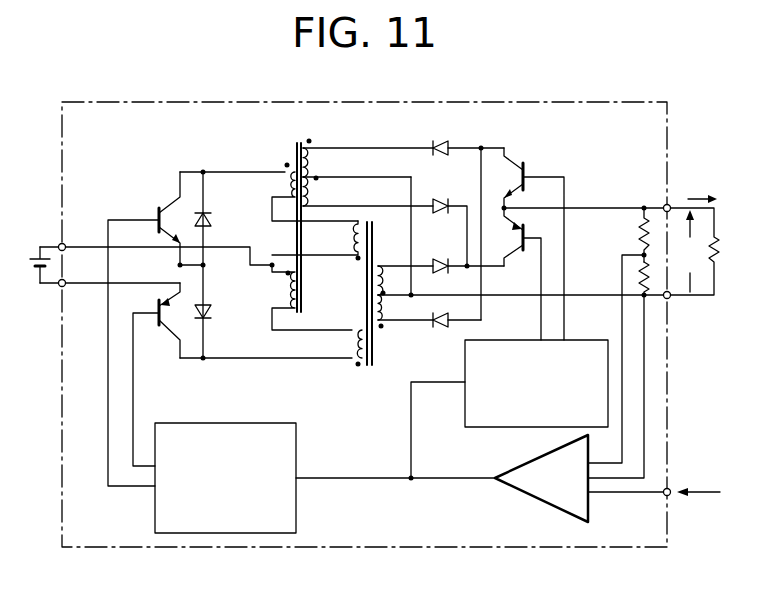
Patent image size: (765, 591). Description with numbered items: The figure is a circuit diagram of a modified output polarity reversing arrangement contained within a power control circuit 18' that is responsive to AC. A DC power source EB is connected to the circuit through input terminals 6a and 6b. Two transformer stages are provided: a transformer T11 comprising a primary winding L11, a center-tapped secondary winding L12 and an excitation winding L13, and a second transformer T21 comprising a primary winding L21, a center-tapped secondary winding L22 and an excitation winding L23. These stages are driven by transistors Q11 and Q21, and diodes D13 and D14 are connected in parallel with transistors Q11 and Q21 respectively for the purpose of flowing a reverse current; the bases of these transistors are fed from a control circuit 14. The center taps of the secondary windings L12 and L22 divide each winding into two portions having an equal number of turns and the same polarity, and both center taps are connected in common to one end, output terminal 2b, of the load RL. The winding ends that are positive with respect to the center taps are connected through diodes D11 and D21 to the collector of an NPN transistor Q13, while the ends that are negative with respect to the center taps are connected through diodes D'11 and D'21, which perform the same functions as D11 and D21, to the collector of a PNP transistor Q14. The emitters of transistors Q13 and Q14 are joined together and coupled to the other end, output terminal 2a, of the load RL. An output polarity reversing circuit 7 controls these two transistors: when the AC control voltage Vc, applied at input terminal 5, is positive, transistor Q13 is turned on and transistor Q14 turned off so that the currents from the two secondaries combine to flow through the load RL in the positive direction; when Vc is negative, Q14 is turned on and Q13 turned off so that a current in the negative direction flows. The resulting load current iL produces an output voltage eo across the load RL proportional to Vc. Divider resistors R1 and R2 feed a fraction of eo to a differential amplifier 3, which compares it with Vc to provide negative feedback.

The power control circuit 18' is at (364, 308).
The input terminal 6a is at (59, 245).
The input terminal 6b is at (59, 287).
The output terminal 2a is at (664, 205).
The output terminal 2b is at (670, 298).
The input terminal 5 is at (670, 496).
The output polarity reversing circuit 7 is at (517, 339).
The differential amplifier 3 is at (527, 463).
The output polarity reversal control circuit 14 is at (231, 423).
The DC power source EB is at (25, 265).
The transistor Q21 is at (156, 218).
The transistor Q11 is at (151, 320).
The PNP transistor Q14 is at (523, 244).
The NPN transistor Q13 is at (512, 274).
The diode D14 is at (221, 218).
The diode D13 is at (222, 311).
The diode D21 is at (444, 219).
The diode D'21 is at (462, 134).
The diode D11 is at (463, 252).
The diode D'11 is at (450, 335).
The second transformer T21 is at (307, 210).
The transformer T11 is at (376, 307).
The primary winding L21 is at (304, 192).
The secondary winding L22 is at (368, 173).
The excitation winding L23 is at (298, 297).
The excitation winding L13 is at (316, 241).
The primary winding L11 is at (341, 348).
The secondary winding L12 is at (522, 287).
The divider resistor R1 is at (630, 234).
The divider resistor R2 is at (643, 264).
The load RL is at (708, 251).
The output voltage eo is at (689, 251).
The load current iL is at (702, 188).
The control voltage Vc is at (698, 482).